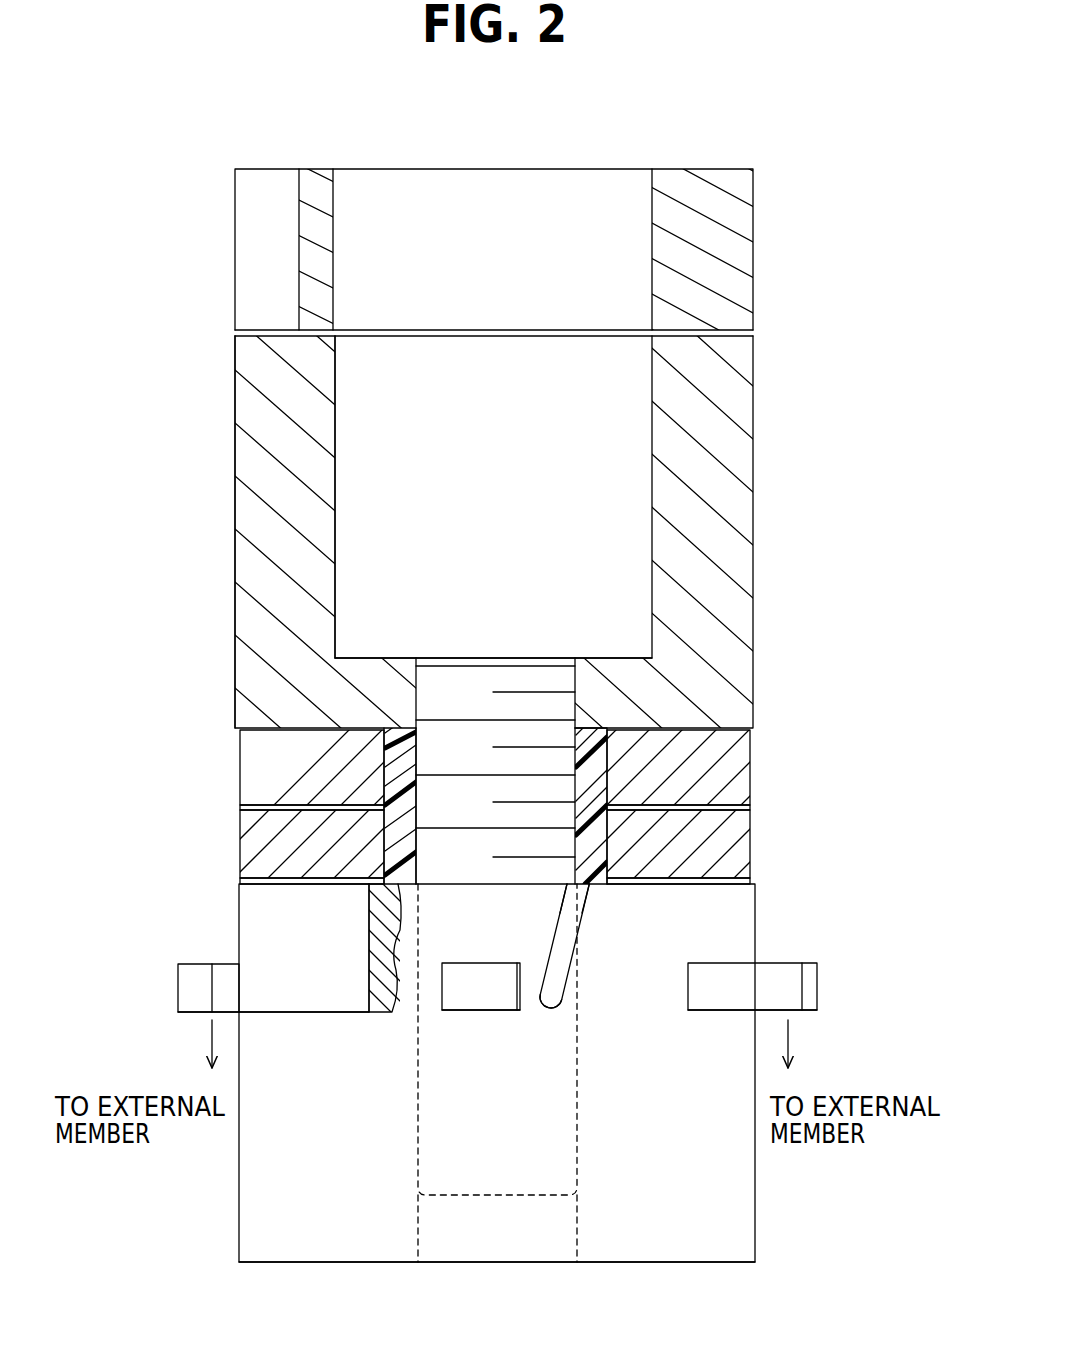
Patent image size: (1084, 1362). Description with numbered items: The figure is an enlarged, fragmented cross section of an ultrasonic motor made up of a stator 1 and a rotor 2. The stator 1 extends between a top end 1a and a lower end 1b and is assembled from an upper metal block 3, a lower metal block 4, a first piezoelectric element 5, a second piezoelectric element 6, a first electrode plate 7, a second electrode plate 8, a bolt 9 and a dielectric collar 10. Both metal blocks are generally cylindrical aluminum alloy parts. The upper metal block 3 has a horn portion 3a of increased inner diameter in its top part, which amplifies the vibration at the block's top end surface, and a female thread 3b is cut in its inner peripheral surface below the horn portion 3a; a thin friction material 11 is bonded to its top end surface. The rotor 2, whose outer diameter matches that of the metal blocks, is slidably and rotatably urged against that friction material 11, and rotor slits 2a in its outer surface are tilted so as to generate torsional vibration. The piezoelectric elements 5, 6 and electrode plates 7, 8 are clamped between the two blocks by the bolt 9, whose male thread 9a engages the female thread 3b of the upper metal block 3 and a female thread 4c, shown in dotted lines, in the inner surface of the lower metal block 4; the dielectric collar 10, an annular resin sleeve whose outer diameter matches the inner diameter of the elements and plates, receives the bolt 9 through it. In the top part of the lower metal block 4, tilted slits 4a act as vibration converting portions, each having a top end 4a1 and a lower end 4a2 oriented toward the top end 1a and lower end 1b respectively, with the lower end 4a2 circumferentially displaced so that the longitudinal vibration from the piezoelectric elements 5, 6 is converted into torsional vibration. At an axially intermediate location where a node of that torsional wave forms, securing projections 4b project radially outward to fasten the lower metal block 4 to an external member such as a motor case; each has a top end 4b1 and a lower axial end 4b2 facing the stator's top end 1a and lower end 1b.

The stator 1 is at (230, 446).
The top end 1a is at (756, 338).
The lower end 1b is at (755, 1262).
The rotor 2 is at (744, 206).
The rotor slits 2a is at (253, 219).
The upper metal block 3 is at (750, 448).
The horn portion 3a is at (336, 428).
The female thread 3b is at (418, 664).
The lower metal block 4 is at (752, 1172).
The slits 4a is at (255, 904).
The top end of slit 4a1 is at (242, 886).
The lower end of slit 4a2 is at (296, 1012).
The securing projections 4b is at (192, 986).
The top end of securing projection 4b1 is at (192, 964).
The lower axial end of securing projection 4b2 is at (196, 1013).
The female thread 4c is at (577, 1110).
The first piezoelectric element 5 is at (740, 764).
The second piezoelectric element 6 is at (740, 834).
The first electrode plate 7 is at (745, 797).
The second electrode plate 8 is at (750, 862).
The bolt 9 is at (495, 688).
The male thread 9a is at (576, 665).
The dielectric collar 10 is at (398, 745).
The friction material 11 is at (248, 330).